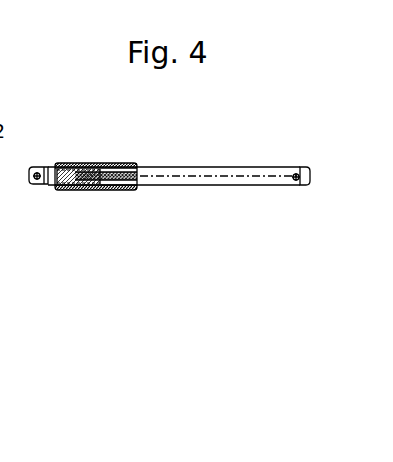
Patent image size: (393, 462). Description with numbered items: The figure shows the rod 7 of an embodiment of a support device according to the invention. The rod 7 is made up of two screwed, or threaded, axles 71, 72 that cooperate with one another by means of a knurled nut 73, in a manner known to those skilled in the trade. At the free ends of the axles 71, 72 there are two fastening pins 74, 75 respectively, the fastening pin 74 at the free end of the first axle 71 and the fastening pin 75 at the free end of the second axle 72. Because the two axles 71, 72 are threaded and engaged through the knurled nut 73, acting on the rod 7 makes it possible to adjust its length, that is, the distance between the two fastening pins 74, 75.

The rod 7 is at (157, 213).
The screwed axle 71 is at (44, 167).
The screwed axle 72 is at (214, 167).
The knurled nut 73 is at (126, 162).
The fastening pin 74 is at (32, 187).
The fastening pin 75 is at (300, 187).